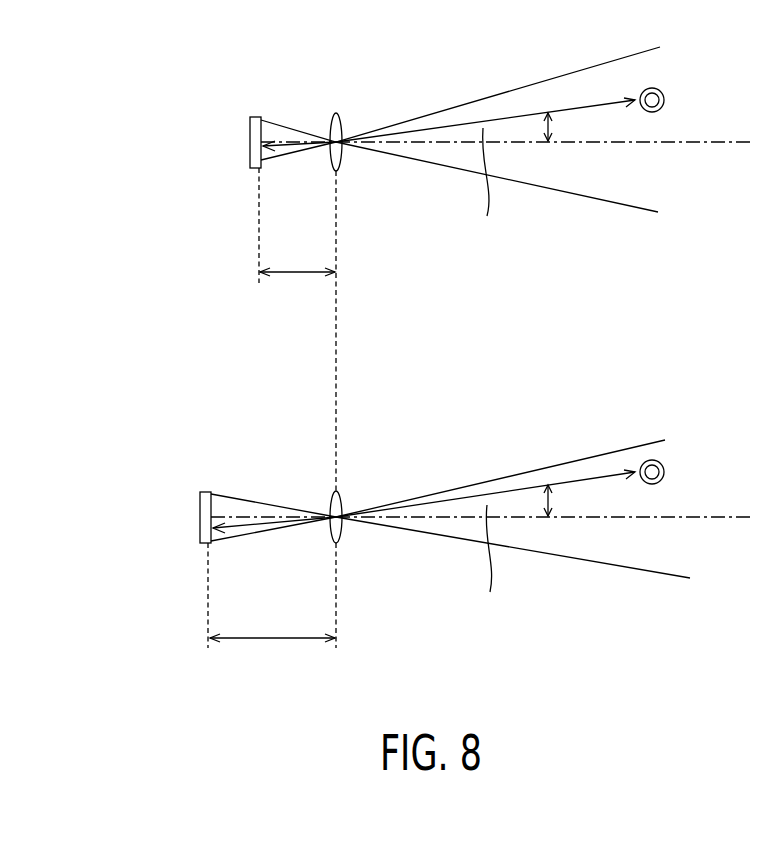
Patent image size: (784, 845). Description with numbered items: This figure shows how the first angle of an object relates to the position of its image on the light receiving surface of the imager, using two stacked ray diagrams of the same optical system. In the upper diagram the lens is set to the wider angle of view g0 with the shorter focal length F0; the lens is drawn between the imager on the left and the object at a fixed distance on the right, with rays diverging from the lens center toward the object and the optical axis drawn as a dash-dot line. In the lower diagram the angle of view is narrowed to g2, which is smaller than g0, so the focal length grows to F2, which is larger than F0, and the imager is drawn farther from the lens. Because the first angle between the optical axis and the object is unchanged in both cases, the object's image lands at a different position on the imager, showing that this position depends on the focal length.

The angle of view g0 is at (568, 73).
The angle of view g2 is at (598, 455).
The focal length F0 is at (239, 289).
The focal length F2 is at (271, 658).